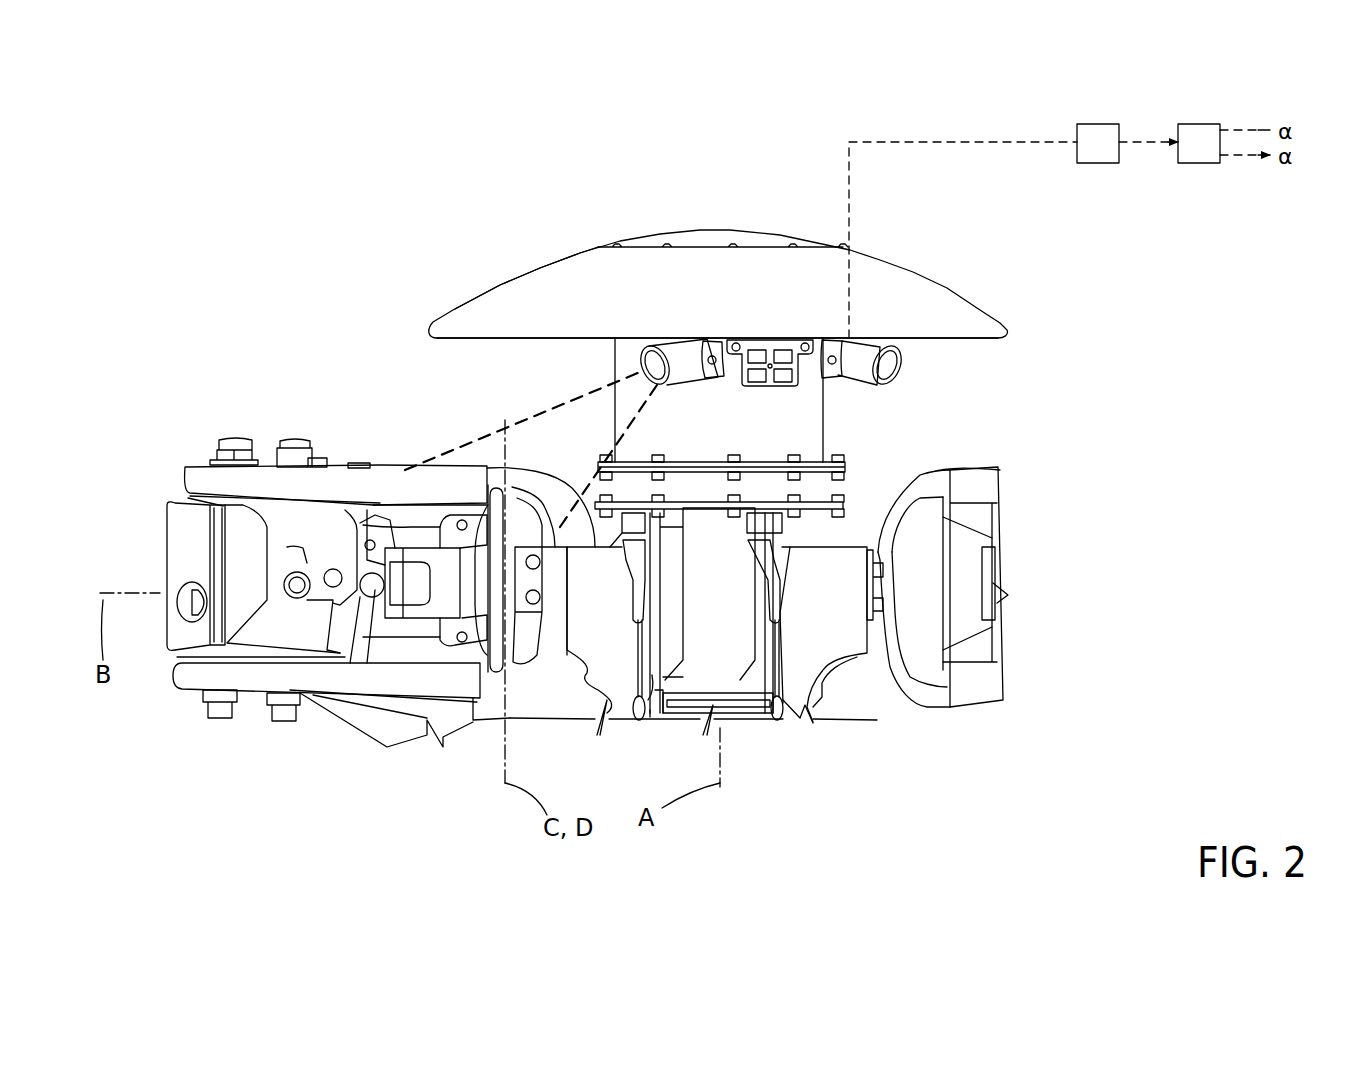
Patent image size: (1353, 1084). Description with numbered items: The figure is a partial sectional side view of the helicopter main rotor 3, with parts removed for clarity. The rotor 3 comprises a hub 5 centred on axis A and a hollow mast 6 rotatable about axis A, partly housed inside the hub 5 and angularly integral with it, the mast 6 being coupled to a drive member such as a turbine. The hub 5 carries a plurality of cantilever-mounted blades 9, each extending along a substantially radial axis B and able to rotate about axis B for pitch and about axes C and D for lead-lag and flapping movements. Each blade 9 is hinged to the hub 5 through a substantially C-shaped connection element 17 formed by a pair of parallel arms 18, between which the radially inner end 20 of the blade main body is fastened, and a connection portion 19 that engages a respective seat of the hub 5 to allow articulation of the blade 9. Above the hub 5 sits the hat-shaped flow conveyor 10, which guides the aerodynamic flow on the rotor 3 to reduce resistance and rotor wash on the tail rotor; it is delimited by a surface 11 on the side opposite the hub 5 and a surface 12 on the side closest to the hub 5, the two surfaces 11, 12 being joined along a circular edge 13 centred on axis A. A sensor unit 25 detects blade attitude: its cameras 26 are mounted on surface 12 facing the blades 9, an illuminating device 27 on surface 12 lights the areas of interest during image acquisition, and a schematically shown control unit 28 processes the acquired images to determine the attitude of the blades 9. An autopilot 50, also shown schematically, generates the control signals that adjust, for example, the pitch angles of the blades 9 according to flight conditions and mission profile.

The main rotor 3 is at (690, 205).
The hub 5 is at (838, 583).
The mast 6 is at (650, 710).
The blade 9 is at (477, 740).
The flow conveyor 10 is at (457, 313).
The surface 11 is at (482, 290).
The surface 12 is at (515, 340).
The circular edge 13 is at (1000, 340).
The connection element 17 is at (270, 486).
The arms 18 is at (385, 470).
The connection portion 19 is at (557, 490).
The end 20 is at (390, 652).
The sensor unit 25 is at (585, 283).
The cameras 26 is at (665, 372).
The illuminating device 27 is at (768, 340).
The control unit 28 is at (1090, 164).
The autopilot 50 is at (1200, 164).